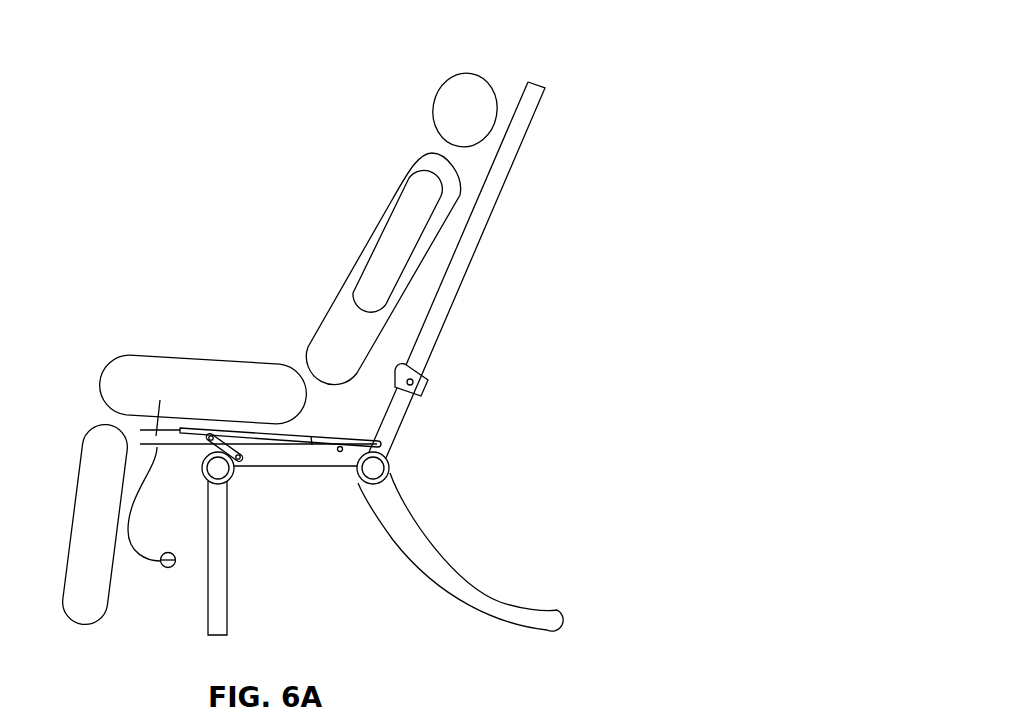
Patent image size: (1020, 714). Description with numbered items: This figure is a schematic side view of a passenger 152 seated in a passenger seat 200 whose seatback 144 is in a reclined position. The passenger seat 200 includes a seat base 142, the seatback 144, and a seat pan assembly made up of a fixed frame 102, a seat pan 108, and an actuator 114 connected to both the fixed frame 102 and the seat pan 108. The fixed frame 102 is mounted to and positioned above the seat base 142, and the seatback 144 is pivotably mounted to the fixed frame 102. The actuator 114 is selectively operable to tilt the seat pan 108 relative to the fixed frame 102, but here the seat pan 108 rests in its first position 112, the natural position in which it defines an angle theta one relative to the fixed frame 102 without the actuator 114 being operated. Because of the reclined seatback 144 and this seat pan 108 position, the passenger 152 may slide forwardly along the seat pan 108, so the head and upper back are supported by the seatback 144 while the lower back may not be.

The passenger seat 200 is at (604, 84).
The fixed frame 102 is at (345, 460).
The seat pan 108 is at (310, 441).
The first position 112 is at (260, 434).
The actuator 114 is at (203, 447).
The seat base 142 is at (447, 578).
The seatback 144 is at (483, 211).
The passenger 152 is at (363, 258).